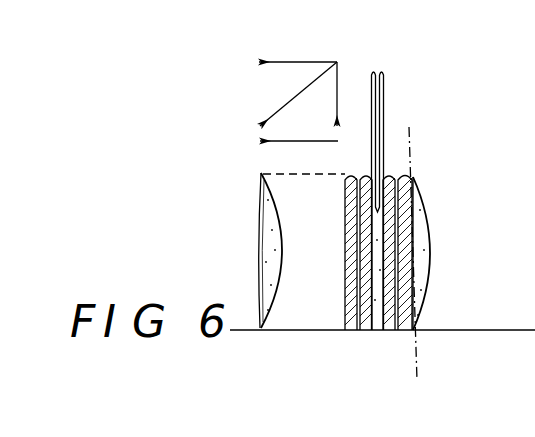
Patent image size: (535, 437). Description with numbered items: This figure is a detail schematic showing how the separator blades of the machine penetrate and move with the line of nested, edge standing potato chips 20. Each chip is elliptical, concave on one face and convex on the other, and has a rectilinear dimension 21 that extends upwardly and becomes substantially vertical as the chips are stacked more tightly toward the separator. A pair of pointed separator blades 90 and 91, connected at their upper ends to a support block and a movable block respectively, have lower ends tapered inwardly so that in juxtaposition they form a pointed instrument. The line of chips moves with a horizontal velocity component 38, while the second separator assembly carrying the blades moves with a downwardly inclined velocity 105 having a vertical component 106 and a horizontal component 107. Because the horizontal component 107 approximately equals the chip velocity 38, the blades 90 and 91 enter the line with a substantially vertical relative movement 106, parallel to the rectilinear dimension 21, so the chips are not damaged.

The potato chip 20 is at (257, 203).
The rectilinear dimension 21 is at (411, 155).
The horizontal velocity component 38 is at (308, 146).
The separator blade 90 is at (371, 83).
The separator blade 91 is at (387, 88).
The downwardly inclined velocity 105 is at (295, 97).
The vertical component 106 is at (336, 96).
The horizontal component 107 is at (293, 62).